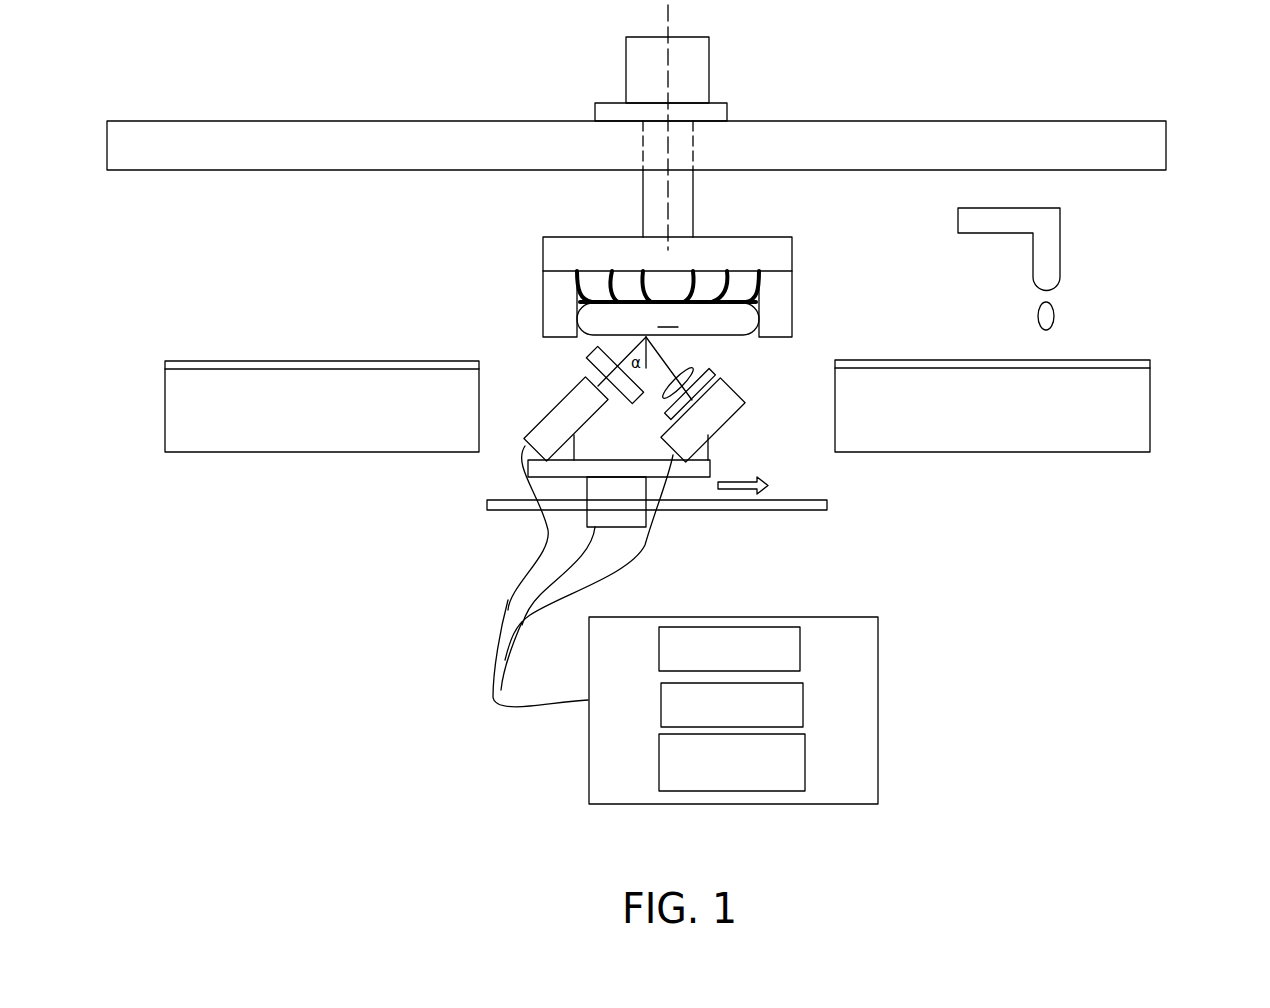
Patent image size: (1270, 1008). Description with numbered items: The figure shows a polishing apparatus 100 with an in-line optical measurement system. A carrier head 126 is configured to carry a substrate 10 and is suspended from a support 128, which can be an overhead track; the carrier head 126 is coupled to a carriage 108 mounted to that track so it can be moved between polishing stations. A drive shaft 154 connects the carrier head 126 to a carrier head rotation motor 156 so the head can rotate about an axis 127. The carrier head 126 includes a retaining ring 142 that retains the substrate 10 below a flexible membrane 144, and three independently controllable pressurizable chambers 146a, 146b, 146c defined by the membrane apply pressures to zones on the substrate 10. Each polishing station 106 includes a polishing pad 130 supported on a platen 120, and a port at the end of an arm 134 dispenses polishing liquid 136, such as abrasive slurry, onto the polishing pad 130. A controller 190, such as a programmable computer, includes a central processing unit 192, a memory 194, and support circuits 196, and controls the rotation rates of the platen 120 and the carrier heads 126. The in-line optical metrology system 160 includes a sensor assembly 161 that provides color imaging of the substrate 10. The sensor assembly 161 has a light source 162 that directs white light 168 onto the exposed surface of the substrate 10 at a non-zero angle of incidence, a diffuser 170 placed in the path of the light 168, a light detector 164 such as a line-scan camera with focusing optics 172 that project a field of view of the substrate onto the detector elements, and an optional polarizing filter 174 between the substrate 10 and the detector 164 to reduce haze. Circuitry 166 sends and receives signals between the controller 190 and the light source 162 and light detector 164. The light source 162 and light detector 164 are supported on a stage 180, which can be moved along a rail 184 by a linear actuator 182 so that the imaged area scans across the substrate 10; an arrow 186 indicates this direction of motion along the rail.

The polishing apparatus 100 is at (235, 612).
The substrate 10 is at (668, 319).
The polishing station 106 is at (286, 327).
The carriage 108 is at (727, 103).
The platen 120 is at (165, 404).
The carrier head 126 is at (536, 246).
The axis 127 is at (668, 15).
The support 128 is at (1133, 121).
The polishing pad 130 is at (1150, 358).
The arm 134 is at (1033, 250).
The polishing liquid 136 is at (1038, 316).
The retaining ring 142 is at (793, 302).
The flexible membrane 144 is at (722, 305).
The chamber 146a is at (668, 287).
The chamber 146b is at (710, 287).
The chamber 146c is at (743, 287).
The drive shaft 154 is at (643, 218).
The carrier head rotation motor 156 is at (626, 80).
The in-line optical metrology system 160 is at (440, 720).
The sensor assembly 161 is at (752, 440).
The light source 162 is at (552, 416).
The light detector 164 is at (703, 420).
The circuitry 166 is at (500, 668).
The light 168 is at (585, 377).
The diffuser 170 is at (596, 350).
The focusing optics 172 is at (686, 376).
The polarizing filter 174 is at (715, 373).
The stage 180 is at (528, 466).
The linear actuator 182 is at (616, 502).
The rail 184 is at (683, 510).
The direction of motion 186 is at (750, 510).
The controller 190 is at (833, 804).
The central processing unit 192 is at (800, 648).
The memory 194 is at (803, 700).
The support circuits 196 is at (805, 760).